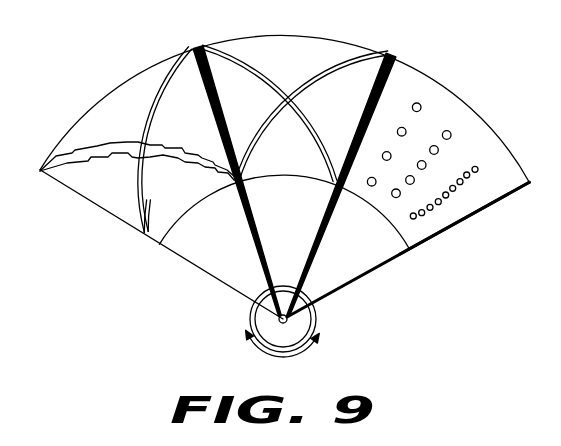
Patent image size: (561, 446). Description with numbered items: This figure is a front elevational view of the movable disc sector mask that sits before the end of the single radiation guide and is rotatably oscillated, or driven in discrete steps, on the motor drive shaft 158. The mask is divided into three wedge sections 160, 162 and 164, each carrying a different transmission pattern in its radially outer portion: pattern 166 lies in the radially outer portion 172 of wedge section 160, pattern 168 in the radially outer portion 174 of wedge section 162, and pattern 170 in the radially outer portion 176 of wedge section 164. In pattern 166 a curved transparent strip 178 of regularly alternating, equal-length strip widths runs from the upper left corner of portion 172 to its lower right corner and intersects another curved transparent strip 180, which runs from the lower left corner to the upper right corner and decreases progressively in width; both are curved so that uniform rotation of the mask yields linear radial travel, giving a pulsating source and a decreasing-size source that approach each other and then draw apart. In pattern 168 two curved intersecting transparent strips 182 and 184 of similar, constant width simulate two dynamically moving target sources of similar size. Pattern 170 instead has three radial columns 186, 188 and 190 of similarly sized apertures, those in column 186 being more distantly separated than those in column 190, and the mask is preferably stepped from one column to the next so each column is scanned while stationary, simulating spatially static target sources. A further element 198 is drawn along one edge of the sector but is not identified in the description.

The motor drive shaft 158 is at (316, 320).
The wedge section 160 is at (199, 247).
The wedge section 162 is at (298, 222).
The wedge section 164 is at (337, 271).
The transmission pattern 166 is at (178, 53).
The transmission pattern 168 is at (313, 78).
The transmission pattern 170 is at (463, 186).
The radially outer portion 172 is at (80, 120).
The radially outer portion 174 is at (305, 36).
The radially outer portion 176 is at (414, 70).
The curved transparent strip 178 is at (60, 168).
The curved transparent strip 180 is at (134, 223).
The curved transparent strip 182 is at (246, 26).
The curved transparent strip 184 is at (357, 54).
The radial column of apertures 186 is at (420, 105).
The radial column of apertures 188 is at (451, 132).
The radial column of apertures 190 is at (478, 167).
The edge portion 198 is at (431, 238).